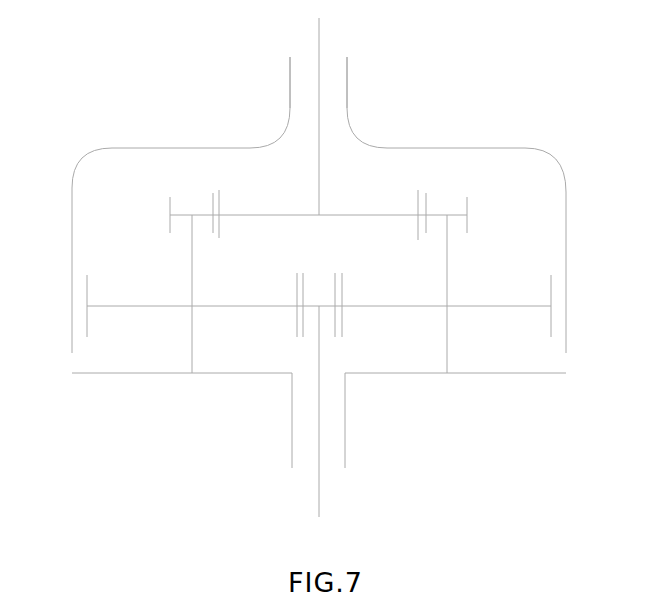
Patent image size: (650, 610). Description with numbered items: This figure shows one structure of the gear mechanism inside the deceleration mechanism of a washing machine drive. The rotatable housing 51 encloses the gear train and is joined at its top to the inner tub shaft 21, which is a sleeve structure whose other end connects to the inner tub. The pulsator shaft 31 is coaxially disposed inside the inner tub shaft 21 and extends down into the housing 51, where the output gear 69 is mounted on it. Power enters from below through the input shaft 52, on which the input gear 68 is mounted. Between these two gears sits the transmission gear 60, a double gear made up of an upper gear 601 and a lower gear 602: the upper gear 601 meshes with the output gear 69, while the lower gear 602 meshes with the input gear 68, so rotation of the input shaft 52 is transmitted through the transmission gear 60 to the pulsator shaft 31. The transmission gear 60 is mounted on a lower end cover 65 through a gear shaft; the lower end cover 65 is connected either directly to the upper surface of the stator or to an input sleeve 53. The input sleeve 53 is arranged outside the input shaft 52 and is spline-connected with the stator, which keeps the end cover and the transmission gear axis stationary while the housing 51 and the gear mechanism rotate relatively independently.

The inner tub shaft 21 is at (347, 83).
The pulsator shaft 31 is at (319, 142).
The housing 51 is at (487, 148).
The upper gear 601 is at (177, 214).
The output gear 69 is at (268, 215).
The lower gear 602 is at (122, 306).
The transmission gear 60 is at (182, 306).
The input gear 68 is at (322, 308).
The lower end cover 65 is at (480, 375).
The input sleeve 53 is at (292, 427).
The input shaft 52 is at (319, 452).